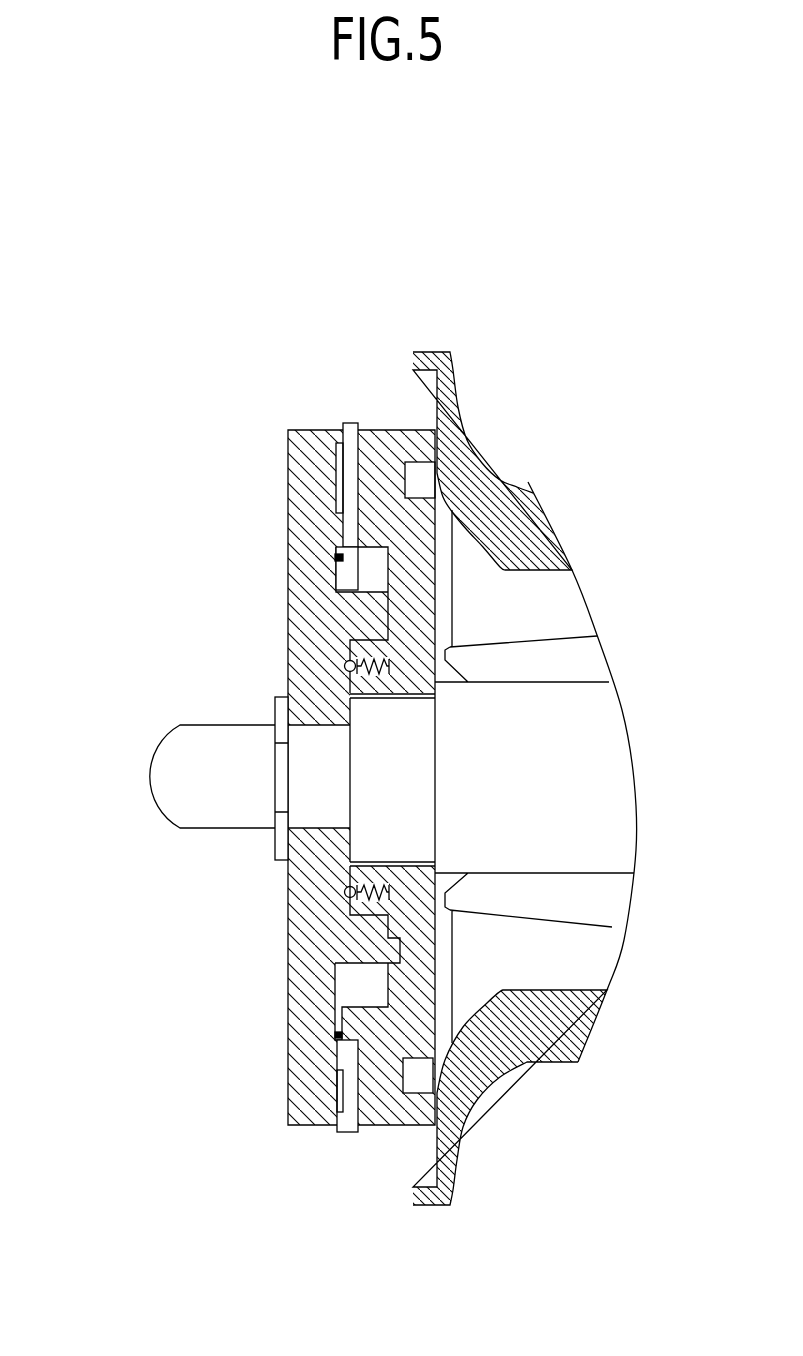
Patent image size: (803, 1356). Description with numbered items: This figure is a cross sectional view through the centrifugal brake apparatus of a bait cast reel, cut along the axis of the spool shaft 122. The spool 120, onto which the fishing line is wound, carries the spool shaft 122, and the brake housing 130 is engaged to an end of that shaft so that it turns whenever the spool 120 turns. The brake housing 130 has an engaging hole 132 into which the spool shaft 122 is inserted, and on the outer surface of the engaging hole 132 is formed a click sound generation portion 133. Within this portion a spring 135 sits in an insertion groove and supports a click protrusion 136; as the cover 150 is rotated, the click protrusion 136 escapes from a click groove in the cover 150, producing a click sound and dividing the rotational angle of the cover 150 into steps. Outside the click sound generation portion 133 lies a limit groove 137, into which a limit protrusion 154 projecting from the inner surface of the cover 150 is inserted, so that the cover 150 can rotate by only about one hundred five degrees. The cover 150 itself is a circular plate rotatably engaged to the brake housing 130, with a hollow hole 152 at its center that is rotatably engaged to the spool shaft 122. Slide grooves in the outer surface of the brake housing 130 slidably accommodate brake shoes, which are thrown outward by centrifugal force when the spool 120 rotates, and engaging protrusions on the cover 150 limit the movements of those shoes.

The spool 120 is at (498, 1088).
The spool shaft 122 is at (188, 792).
The brake housing 130 is at (418, 430).
The engaging hole 132 is at (332, 892).
The click sound generation portion 133 is at (345, 888).
The spring 135 is at (346, 660).
The click protrusion 136 is at (362, 670).
The limit groove 137 is at (300, 957).
The cover 150 is at (286, 543).
The hollow hole 152 is at (307, 832).
The limit protrusion 154 is at (300, 957).